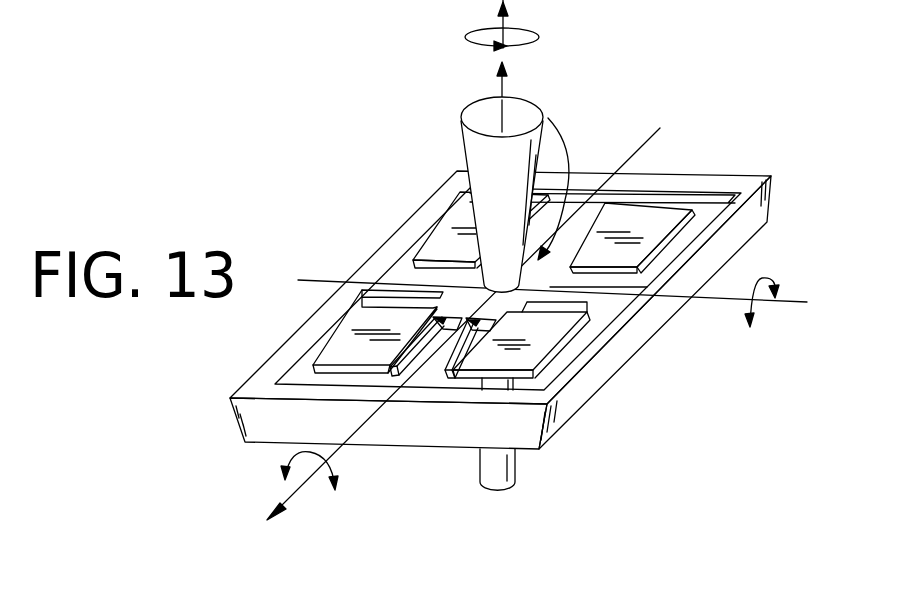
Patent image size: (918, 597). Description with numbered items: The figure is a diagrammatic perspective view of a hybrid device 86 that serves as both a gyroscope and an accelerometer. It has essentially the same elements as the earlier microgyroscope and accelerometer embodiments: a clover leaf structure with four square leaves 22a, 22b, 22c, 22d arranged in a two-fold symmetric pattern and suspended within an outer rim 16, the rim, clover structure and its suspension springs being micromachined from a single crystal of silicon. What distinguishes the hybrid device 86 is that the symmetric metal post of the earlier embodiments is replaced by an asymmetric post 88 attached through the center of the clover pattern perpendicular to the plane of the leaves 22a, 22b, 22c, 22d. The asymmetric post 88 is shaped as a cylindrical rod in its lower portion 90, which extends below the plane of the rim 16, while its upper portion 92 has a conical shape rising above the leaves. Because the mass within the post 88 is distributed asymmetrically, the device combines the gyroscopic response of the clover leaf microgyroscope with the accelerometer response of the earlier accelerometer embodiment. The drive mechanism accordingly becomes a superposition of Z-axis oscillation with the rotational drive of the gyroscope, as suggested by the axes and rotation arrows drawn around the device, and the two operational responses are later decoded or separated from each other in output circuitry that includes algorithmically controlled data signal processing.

The rim 16 is at (538, 437).
The clover leaf 22a is at (340, 350).
The clover leaf 22b is at (547, 337).
The clover leaf 22c is at (640, 227).
The clover leaf 22d is at (447, 238).
The hybrid device 86 is at (390, 139).
The asymmetric post 88 is at (546, 135).
The lower portion 90 is at (492, 324).
The upper portion 92 is at (570, 183).